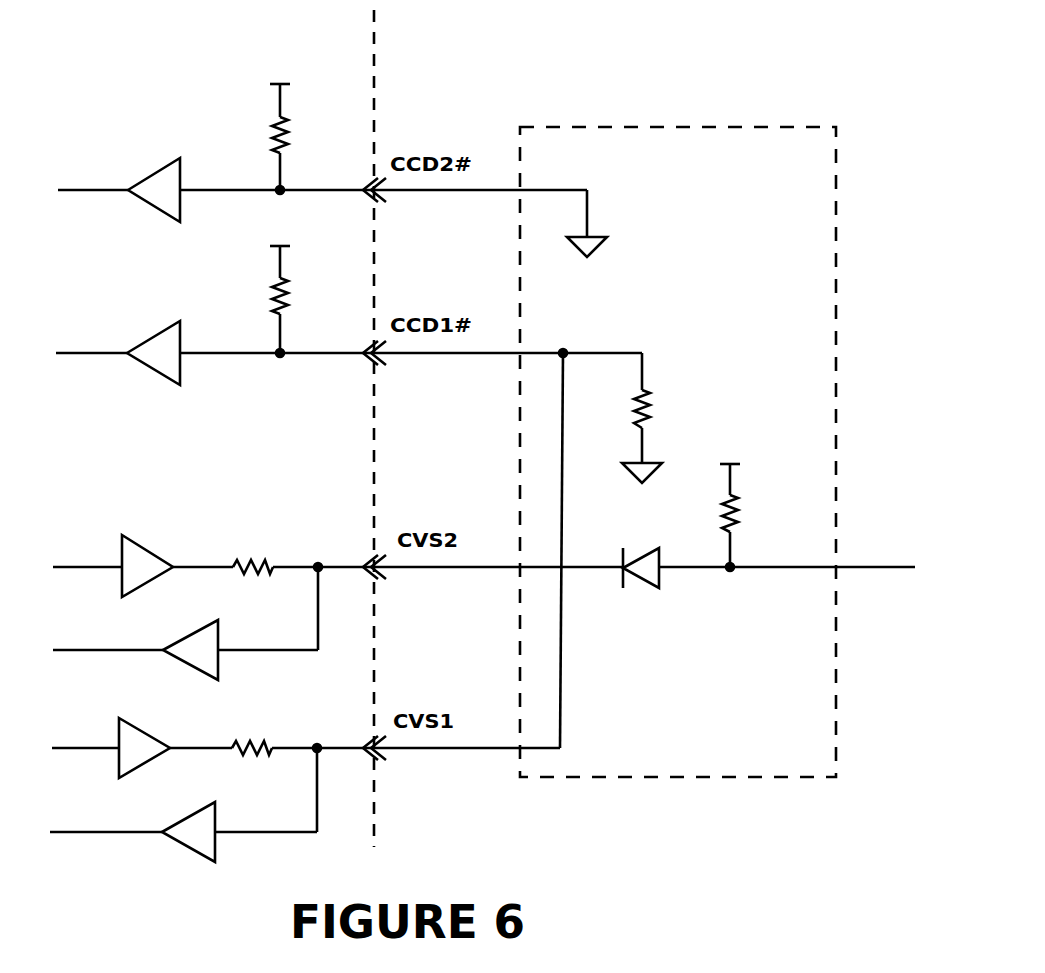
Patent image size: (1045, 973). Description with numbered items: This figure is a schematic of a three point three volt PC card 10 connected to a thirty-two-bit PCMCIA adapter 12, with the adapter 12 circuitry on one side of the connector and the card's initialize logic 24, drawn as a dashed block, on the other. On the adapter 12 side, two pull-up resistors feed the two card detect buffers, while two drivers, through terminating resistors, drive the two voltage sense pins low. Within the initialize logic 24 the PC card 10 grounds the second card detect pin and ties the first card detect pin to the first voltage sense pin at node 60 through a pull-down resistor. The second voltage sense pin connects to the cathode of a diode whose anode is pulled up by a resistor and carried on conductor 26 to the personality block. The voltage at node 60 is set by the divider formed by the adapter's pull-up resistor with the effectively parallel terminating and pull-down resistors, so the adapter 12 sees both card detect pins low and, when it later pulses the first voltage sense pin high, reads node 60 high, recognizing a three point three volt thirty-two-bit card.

The PC card 10 is at (567, 48).
The PCMCIA adapter 12 is at (320, 48).
The initialize logic 24 is at (757, 128).
The conductor 26 is at (868, 567).
The node 60 is at (565, 352).